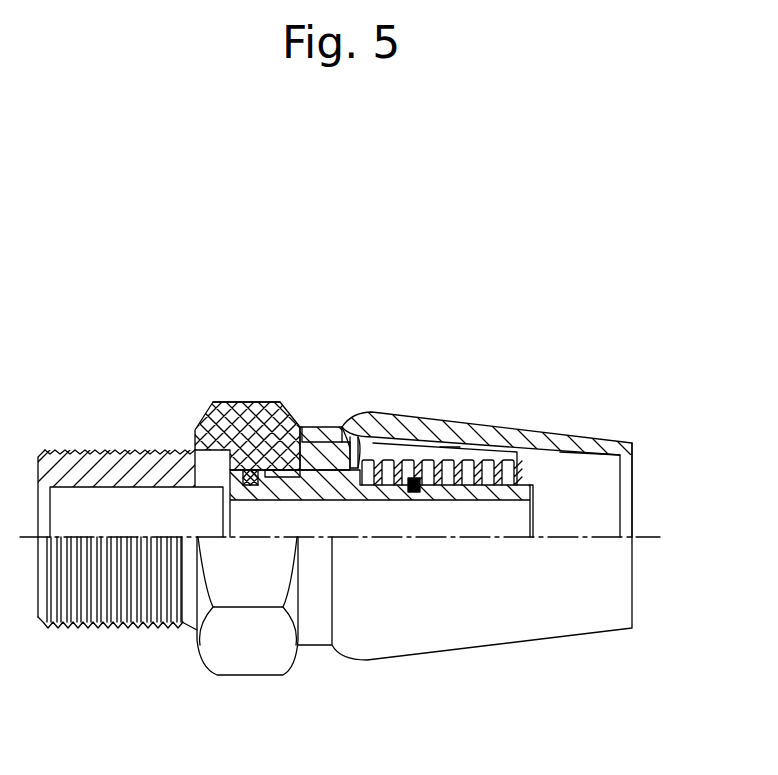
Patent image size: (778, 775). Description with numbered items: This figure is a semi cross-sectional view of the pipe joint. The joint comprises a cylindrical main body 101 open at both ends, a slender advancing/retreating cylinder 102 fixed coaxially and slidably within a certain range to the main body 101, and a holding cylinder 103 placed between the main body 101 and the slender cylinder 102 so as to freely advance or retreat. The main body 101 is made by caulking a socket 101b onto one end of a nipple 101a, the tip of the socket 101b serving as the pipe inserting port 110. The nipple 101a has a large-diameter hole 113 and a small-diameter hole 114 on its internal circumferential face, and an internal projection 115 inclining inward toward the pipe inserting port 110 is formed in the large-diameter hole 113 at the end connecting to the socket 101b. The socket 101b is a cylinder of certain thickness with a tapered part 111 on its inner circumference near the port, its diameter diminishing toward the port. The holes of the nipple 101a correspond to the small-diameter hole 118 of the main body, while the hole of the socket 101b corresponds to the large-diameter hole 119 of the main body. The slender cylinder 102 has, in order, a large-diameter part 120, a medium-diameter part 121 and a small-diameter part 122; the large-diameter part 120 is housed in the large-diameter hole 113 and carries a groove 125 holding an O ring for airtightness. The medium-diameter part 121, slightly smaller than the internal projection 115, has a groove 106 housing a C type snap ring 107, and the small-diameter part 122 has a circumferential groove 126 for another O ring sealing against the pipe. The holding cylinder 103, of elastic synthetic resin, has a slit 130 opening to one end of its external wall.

The small-diameter hole of the main body 118 is at (158, 306).
The small-diameter hole 114 is at (90, 490).
The large-diameter hole 113 is at (240, 468).
The large-diameter part 120 is at (193, 442).
The groove 125 is at (208, 404).
The main body 101 is at (330, 306).
The nipple 101a is at (243, 402).
The socket 101b is at (310, 425).
The C type snap ring 107 is at (322, 440).
The groove 106 is at (350, 455).
The internal projection 115 is at (356, 440).
The medium-diameter part 121 is at (273, 402).
The holding cylinder 103 is at (365, 445).
The slit 130 is at (460, 448).
The large-diameter hole of the main body 119 is at (418, 480).
The circumferential groove 126 is at (450, 447).
The small-diameter part 122 is at (531, 489).
The tapered part 111 is at (580, 458).
The slender advancing/retreating cylinder 102 is at (545, 489).
The pipe inserting port 110 is at (643, 489).